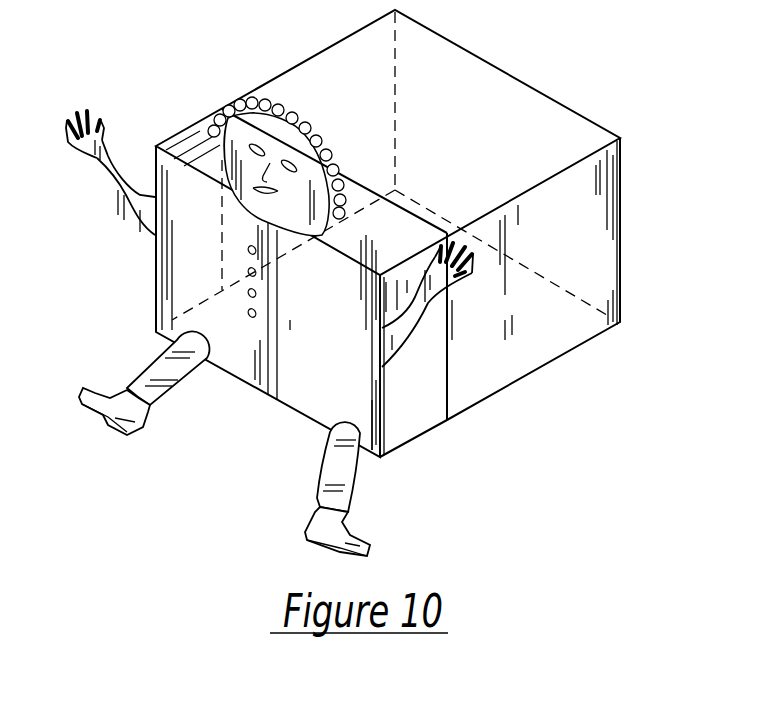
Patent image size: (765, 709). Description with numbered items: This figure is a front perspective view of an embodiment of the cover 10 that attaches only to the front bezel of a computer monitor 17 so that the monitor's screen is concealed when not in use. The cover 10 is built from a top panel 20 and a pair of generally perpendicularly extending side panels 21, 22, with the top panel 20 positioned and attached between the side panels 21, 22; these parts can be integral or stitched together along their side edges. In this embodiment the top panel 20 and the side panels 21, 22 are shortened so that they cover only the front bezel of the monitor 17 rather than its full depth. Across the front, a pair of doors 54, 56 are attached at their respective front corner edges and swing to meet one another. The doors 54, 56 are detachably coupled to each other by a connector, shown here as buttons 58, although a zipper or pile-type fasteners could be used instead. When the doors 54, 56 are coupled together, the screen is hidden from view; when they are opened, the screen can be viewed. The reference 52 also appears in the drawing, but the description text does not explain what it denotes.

The cover 10 is at (183, 122).
The top panel 20 is at (203, 133).
The side panel 21 is at (157, 257).
The monitor 17 is at (597, 272).
The door 54 is at (216, 270).
The door 56 is at (344, 322).
The buttons 58 is at (250, 318).
The side panel 22 is at (424, 399).
The bottom edge 52 is at (368, 458).